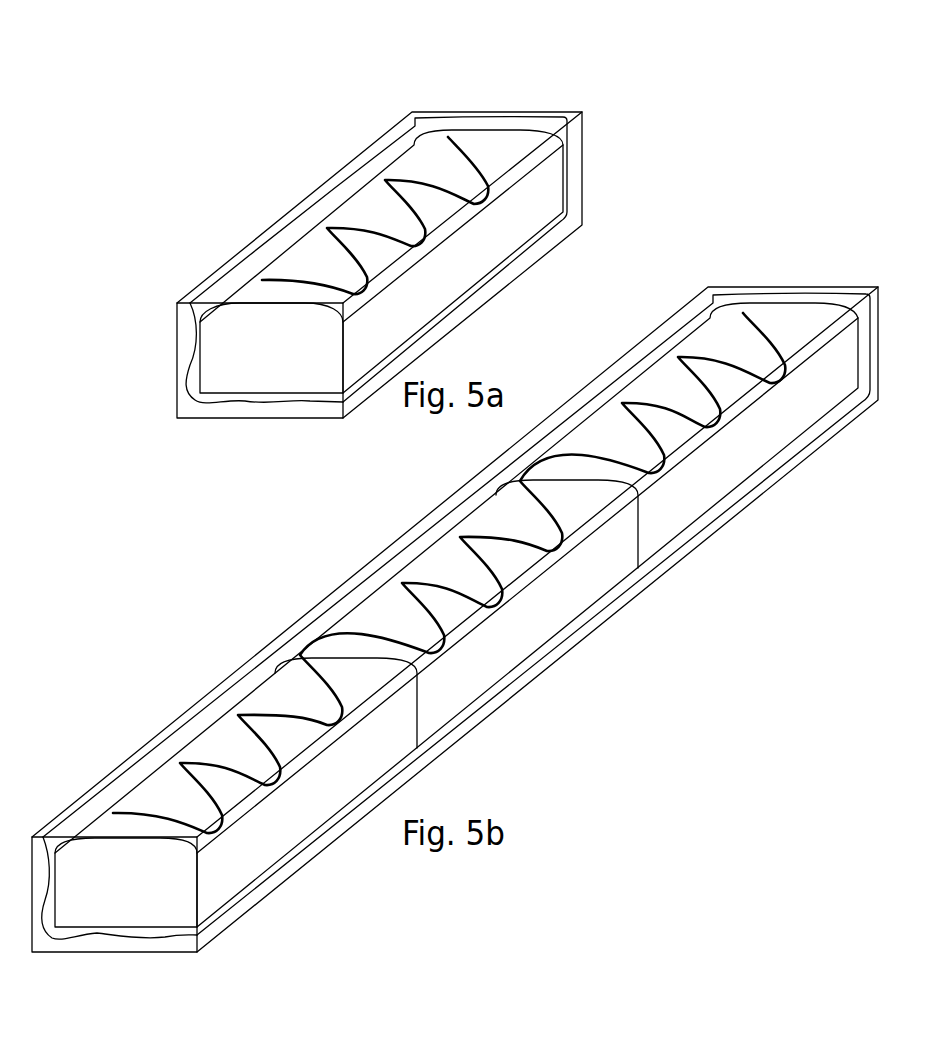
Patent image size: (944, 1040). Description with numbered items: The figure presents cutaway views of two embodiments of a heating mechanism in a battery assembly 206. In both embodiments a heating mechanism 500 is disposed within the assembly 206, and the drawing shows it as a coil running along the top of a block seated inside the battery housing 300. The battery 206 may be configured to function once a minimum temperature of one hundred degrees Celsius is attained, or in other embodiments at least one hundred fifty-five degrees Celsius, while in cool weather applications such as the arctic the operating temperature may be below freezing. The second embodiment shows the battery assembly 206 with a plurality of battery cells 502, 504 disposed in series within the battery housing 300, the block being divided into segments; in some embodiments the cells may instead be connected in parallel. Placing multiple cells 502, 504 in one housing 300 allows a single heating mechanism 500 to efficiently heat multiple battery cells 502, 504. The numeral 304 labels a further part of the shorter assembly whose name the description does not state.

In FIG. 5A, the battery assembly 206 is at (488, 82).
In FIG. 5B, the battery assembly 206 is at (713, 572).
In FIG. 5A, the battery housing 300 is at (186, 409).
In FIG. 5B, the battery housing 300 is at (112, 943).
In FIG. 5A, the insulating body 304 is at (213, 340).
In FIG. 5A, the heating mechanism 500 is at (327, 228).
In FIG. 5B, the heating mechanism 500 is at (743, 313).
In FIG. 5B, the battery cell 502 is at (240, 875).
In FIG. 5B, the battery cell 504 is at (460, 682).